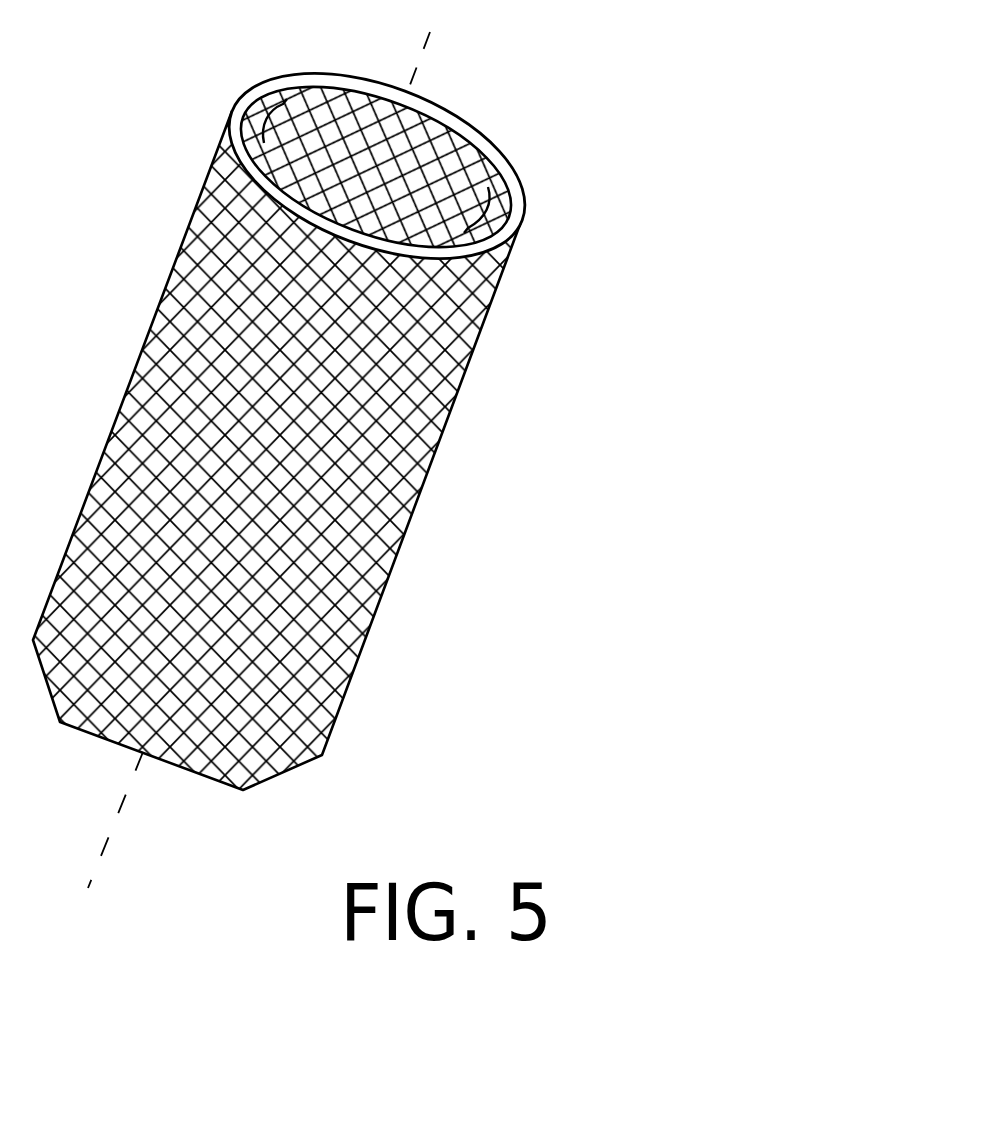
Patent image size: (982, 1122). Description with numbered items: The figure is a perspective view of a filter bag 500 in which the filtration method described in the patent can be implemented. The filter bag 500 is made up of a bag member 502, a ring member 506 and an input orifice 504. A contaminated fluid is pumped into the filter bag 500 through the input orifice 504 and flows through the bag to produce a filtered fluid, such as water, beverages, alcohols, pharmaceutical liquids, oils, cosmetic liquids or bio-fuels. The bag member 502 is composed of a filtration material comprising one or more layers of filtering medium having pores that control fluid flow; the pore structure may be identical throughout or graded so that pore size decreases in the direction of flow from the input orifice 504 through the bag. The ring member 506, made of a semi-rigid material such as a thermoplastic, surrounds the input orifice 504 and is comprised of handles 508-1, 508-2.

The filter bag 500 is at (623, 104).
The bag member 502 is at (188, 233).
The input orifice 504 is at (357, 148).
The ring member 506 is at (453, 114).
The first handle 508-1 is at (244, 114).
The second handle 508-2 is at (512, 218).